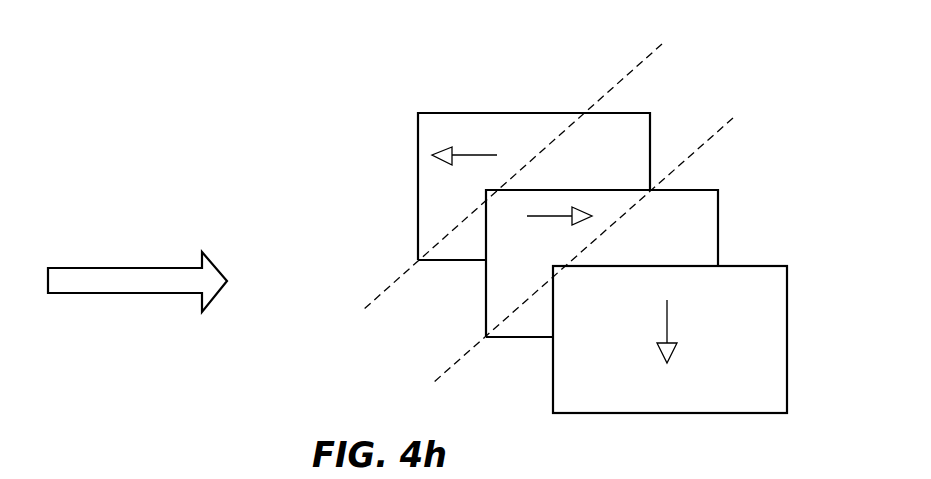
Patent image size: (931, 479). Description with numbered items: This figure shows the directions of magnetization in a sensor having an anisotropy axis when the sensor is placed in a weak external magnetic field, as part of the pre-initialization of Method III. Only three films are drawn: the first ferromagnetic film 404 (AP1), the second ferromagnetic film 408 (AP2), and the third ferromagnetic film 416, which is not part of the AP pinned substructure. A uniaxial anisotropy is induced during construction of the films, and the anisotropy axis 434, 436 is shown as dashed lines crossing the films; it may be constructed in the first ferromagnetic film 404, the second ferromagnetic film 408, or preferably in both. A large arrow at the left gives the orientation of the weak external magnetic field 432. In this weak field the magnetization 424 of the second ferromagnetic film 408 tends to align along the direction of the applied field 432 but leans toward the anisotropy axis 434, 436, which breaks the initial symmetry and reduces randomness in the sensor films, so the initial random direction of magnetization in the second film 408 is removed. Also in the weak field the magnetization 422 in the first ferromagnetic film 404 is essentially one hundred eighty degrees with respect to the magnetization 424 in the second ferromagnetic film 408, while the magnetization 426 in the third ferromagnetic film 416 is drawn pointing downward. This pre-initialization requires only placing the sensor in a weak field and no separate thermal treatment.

The first ferromagnetic film 404 is at (652, 140).
The second ferromagnetic film 408 is at (718, 213).
The third ferromagnetic film 416 is at (786, 292).
The magnetization of the first ferromagnetic film 422 is at (472, 152).
The magnetization of the second ferromagnetic film 424 is at (546, 224).
The magnetization of the third ferromagnetic film 426 is at (665, 323).
The weak external magnetic field orientation 432 is at (130, 266).
The anisotropy axis 434 is at (645, 60).
The anisotropy axis 436 is at (718, 133).